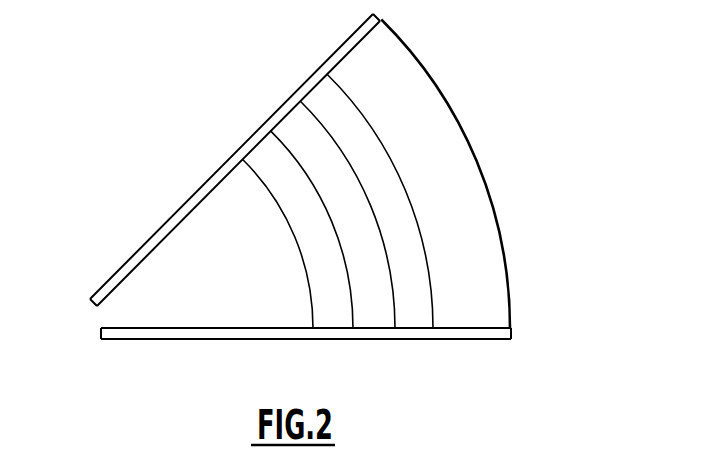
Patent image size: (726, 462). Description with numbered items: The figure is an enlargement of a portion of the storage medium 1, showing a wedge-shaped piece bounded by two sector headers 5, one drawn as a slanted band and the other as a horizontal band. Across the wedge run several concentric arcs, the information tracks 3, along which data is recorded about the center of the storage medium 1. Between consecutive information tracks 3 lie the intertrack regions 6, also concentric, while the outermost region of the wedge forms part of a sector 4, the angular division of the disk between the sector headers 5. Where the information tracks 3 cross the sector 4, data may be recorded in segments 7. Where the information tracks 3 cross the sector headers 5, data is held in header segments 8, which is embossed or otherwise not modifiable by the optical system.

The storage medium 1 is at (182, 108).
The information tracks 3 is at (330, 215).
The sectors 4 is at (400, 99).
The sector headers 5 is at (383, 16).
The intertrack regions 6 is at (362, 237).
The segments 7 is at (355, 278).
The header segments 8 is at (420, 340).